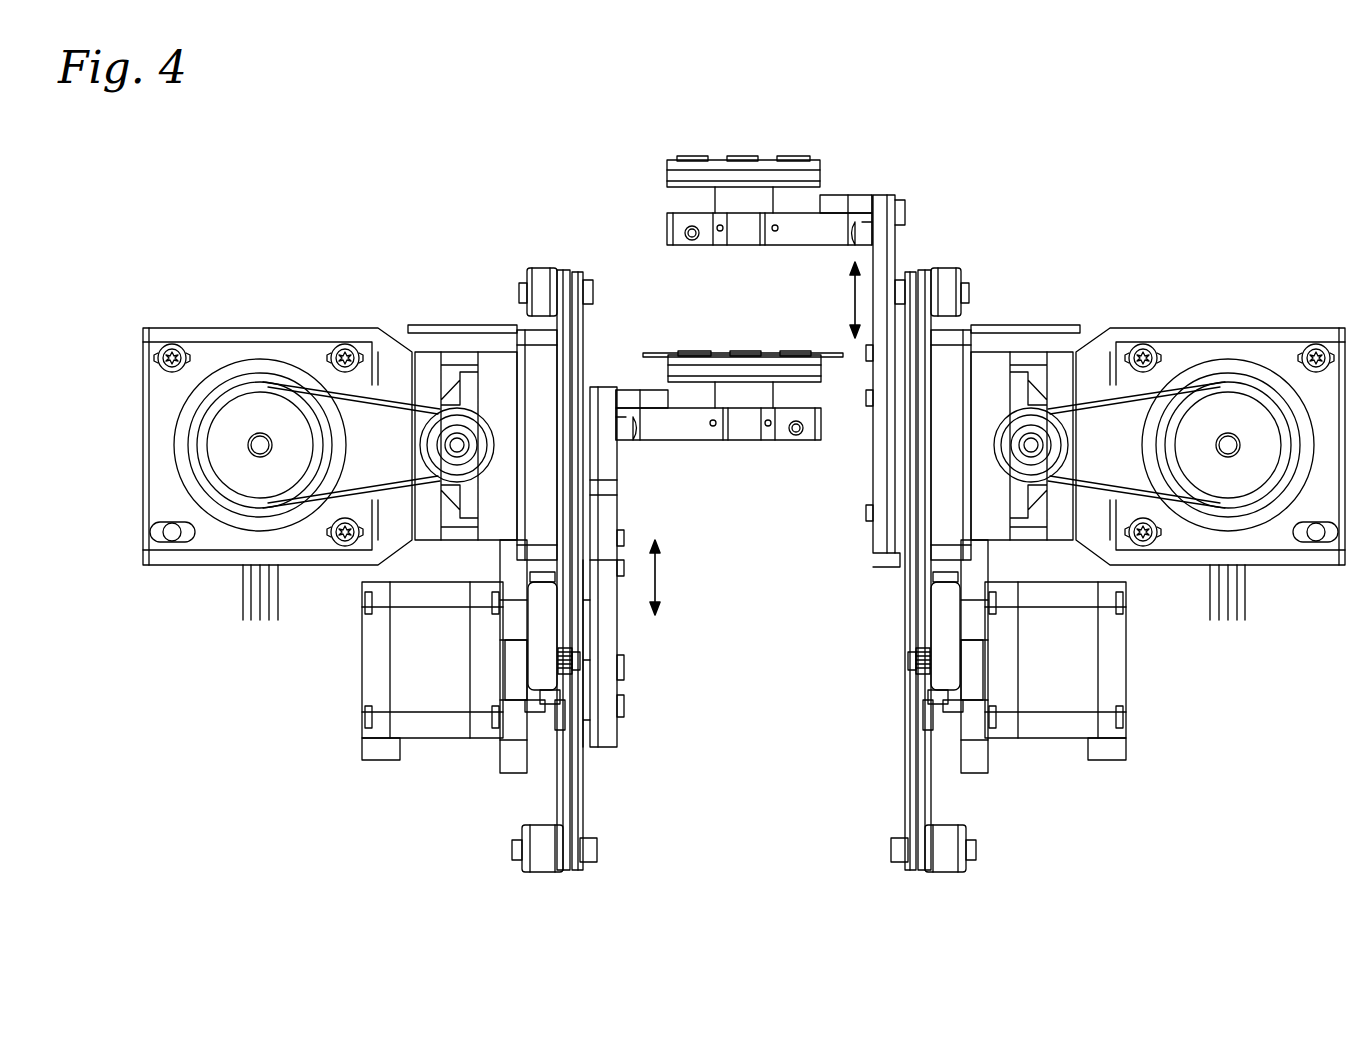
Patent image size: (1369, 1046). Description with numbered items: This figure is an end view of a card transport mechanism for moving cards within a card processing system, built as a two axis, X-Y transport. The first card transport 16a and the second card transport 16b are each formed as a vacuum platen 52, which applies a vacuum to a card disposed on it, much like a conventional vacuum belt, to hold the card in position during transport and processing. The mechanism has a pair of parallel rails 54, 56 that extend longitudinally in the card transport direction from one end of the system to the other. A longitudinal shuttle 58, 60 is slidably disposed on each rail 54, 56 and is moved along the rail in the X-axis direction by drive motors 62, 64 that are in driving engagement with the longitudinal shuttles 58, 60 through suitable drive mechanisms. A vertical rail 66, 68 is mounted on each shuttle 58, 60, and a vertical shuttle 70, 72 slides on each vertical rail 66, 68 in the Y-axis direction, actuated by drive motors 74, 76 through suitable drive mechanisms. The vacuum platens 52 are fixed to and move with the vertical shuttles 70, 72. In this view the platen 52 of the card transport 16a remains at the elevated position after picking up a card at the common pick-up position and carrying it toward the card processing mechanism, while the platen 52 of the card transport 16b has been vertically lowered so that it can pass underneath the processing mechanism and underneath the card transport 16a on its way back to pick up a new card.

The first card transport 16a is at (688, 132).
The second card transport 16b is at (748, 456).
The vacuum platen 52 is at (775, 158).
The rail 54 is at (957, 368).
The rail 56 is at (532, 368).
The longitudinal shuttle 58 is at (837, 225).
The longitudinal shuttle 60 is at (657, 412).
The drive motor 62 is at (1268, 327).
The drive motor 64 is at (207, 327).
The vertical rail 66 is at (918, 762).
The vertical rail 68 is at (570, 790).
The vertical shuttle 70 is at (880, 317).
The vertical shuttle 72 is at (605, 530).
The drive motor 74 is at (1055, 738).
The drive motor 76 is at (430, 738).